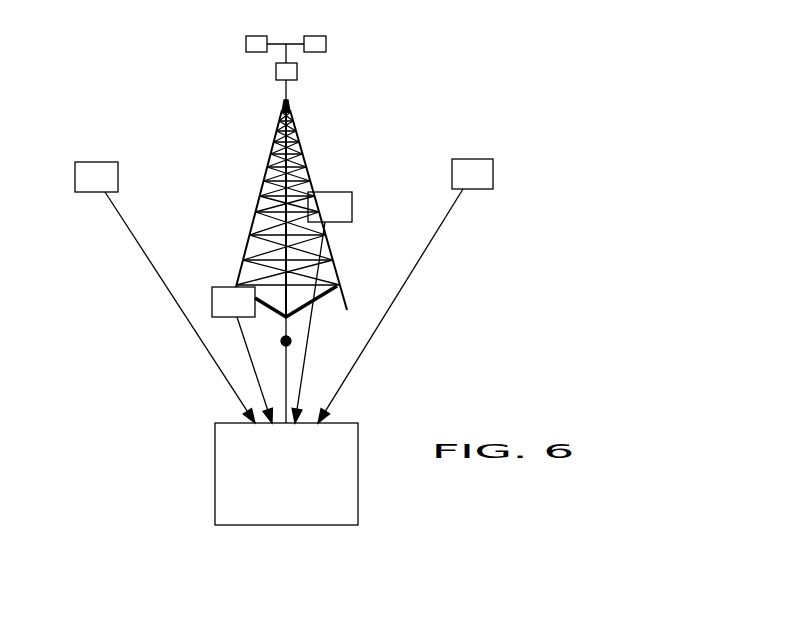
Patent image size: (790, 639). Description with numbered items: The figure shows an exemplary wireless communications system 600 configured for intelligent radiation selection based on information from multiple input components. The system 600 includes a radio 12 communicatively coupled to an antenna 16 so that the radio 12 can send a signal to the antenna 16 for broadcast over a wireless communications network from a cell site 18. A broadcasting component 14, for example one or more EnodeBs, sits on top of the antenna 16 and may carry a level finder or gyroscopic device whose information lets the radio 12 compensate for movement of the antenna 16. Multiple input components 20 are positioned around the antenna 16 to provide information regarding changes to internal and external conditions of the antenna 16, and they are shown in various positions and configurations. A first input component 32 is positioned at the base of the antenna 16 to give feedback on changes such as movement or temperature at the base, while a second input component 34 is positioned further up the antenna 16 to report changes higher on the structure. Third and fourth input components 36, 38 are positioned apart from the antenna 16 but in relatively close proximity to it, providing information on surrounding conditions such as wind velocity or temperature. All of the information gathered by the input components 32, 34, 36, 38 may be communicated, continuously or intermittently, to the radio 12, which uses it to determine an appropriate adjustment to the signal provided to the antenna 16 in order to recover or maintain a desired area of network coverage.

The wireless communications system 600 is at (567, 157).
The broadcasting component 14 is at (257, 36).
The antenna 16 is at (264, 187).
The cell site 18 is at (330, 315).
The input components 20 is at (96, 162).
The first input component 32 is at (232, 303).
The second input component 34 is at (340, 208).
The third input component 36 is at (486, 176).
The fourth input component 38 is at (83, 177).
The radio 12 is at (226, 470).